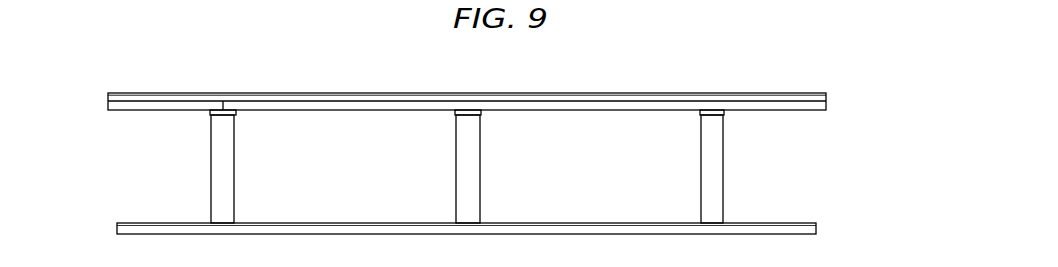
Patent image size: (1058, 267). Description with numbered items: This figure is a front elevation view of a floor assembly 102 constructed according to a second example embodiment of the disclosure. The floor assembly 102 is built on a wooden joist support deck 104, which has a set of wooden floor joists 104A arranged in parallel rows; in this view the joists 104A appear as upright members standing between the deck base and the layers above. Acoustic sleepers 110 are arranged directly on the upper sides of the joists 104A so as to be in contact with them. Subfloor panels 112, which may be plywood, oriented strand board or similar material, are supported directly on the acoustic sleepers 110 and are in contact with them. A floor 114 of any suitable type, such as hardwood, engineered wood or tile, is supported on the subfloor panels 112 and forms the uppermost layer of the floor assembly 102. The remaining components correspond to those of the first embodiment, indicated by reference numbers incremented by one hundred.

The floor assembly 102 is at (864, 156).
The wooden joist support deck 104 is at (764, 152).
The wooden floor joists 104A is at (229, 177).
The acoustic sleepers 110 is at (236, 112).
The subfloor panels 112 is at (823, 107).
The floor 114 is at (783, 93).